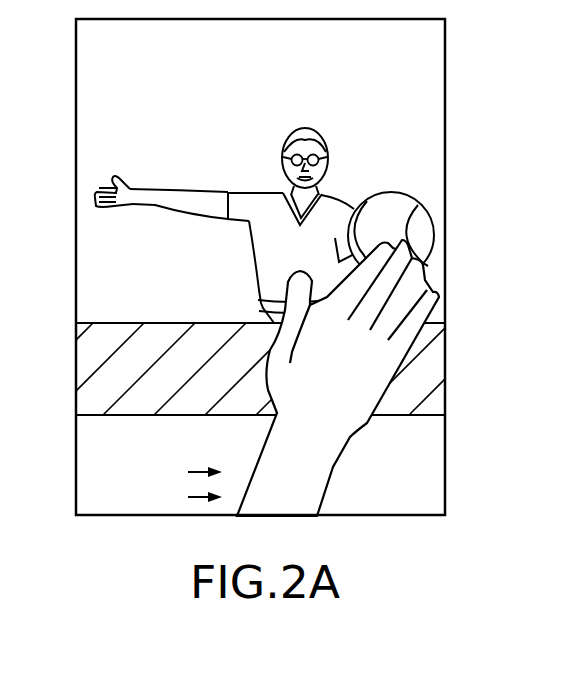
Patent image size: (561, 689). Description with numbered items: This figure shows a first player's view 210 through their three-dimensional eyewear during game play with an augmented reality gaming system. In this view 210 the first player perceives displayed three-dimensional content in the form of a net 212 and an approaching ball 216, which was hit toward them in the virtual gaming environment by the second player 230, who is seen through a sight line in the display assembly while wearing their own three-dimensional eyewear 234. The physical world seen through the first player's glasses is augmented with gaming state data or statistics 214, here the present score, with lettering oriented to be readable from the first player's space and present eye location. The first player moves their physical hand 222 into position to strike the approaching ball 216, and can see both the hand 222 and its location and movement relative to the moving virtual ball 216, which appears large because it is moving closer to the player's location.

The first player's view 210 is at (445, 42).
The net 212 is at (83, 322).
The gaming state data or statistics 214 is at (184, 451).
The ball 216 is at (386, 191).
The hand 222 is at (360, 423).
The second player 230 is at (247, 167).
The 3D eyewear 234 is at (318, 157).